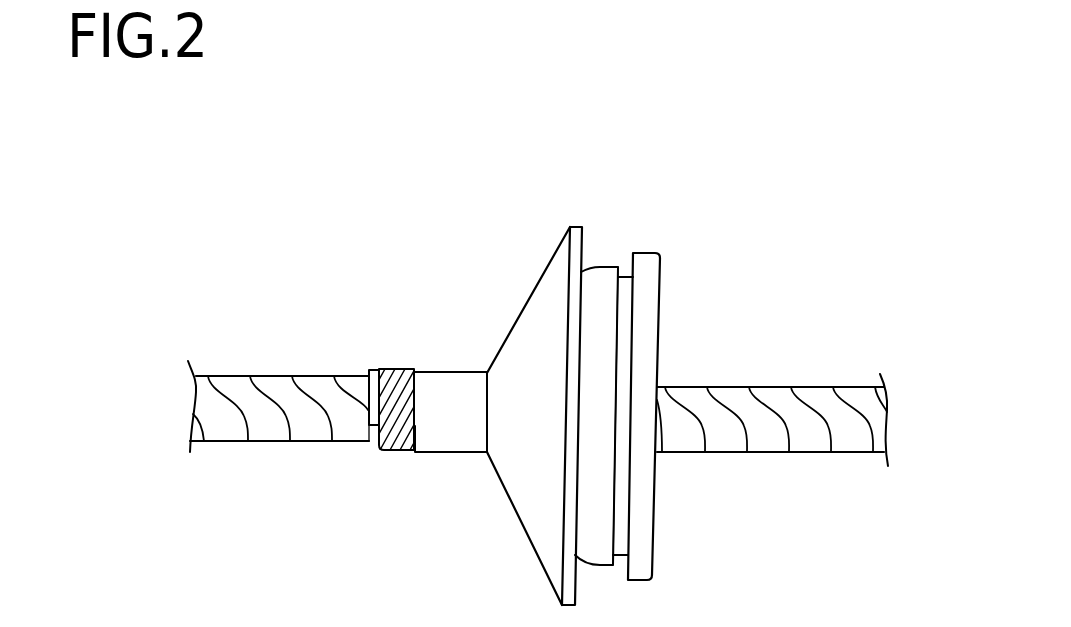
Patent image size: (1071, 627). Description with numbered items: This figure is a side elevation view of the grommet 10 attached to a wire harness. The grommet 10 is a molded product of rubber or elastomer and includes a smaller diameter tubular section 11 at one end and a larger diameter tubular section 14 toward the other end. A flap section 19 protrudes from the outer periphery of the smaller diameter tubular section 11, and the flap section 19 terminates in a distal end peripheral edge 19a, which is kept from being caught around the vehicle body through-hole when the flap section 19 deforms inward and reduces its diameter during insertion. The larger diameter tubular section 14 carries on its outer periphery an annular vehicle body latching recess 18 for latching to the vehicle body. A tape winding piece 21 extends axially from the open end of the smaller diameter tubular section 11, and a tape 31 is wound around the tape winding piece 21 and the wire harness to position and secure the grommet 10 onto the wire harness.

The grommet 10 is at (365, 200).
The smaller diameter tubular section 11 is at (445, 453).
The larger diameter tubular section 14 is at (640, 253).
The vehicle body latching recess 18 is at (625, 268).
The flap section 19 is at (525, 298).
The distal end peripheral edge 19a is at (576, 225).
The tape winding piece 21 is at (372, 369).
The tape 31 is at (400, 367).